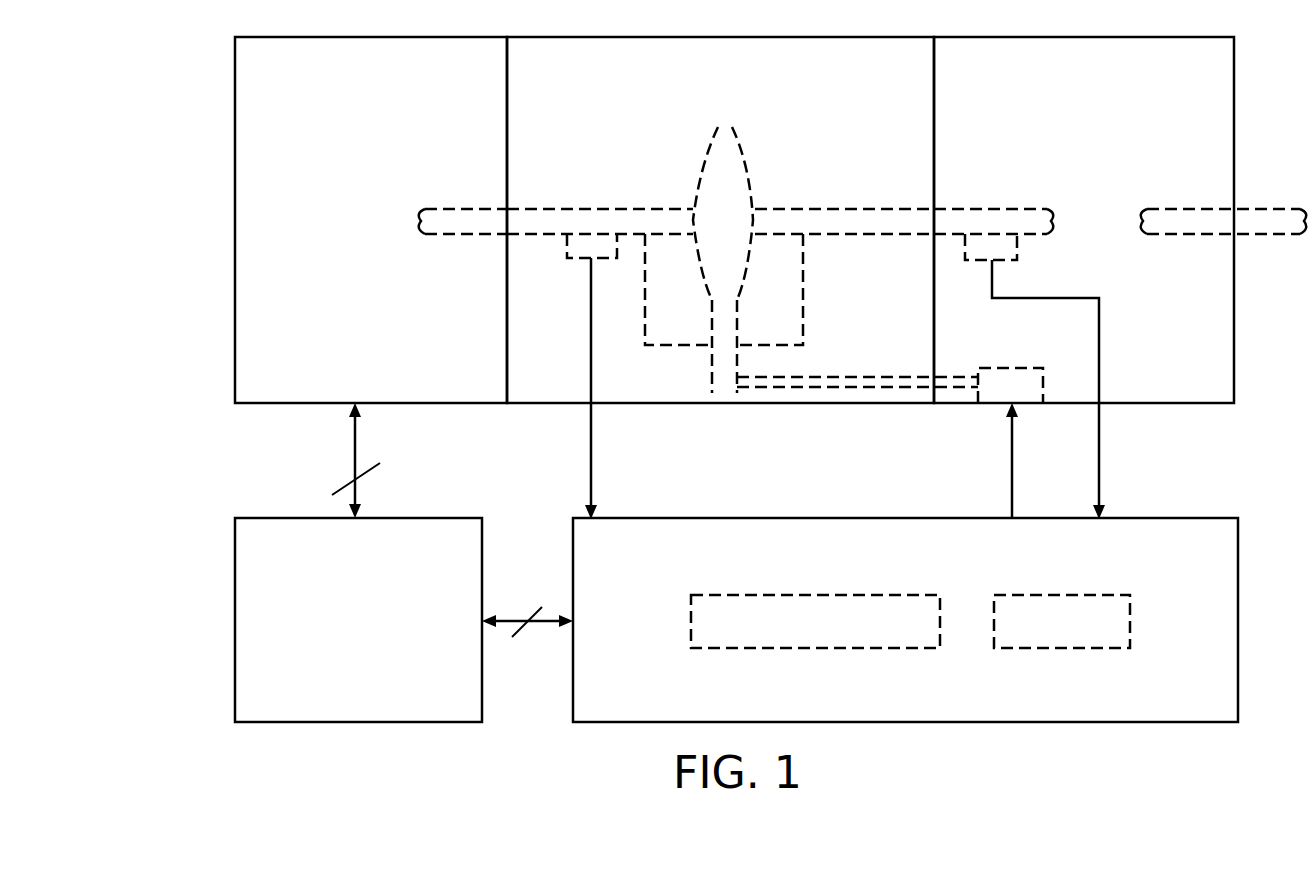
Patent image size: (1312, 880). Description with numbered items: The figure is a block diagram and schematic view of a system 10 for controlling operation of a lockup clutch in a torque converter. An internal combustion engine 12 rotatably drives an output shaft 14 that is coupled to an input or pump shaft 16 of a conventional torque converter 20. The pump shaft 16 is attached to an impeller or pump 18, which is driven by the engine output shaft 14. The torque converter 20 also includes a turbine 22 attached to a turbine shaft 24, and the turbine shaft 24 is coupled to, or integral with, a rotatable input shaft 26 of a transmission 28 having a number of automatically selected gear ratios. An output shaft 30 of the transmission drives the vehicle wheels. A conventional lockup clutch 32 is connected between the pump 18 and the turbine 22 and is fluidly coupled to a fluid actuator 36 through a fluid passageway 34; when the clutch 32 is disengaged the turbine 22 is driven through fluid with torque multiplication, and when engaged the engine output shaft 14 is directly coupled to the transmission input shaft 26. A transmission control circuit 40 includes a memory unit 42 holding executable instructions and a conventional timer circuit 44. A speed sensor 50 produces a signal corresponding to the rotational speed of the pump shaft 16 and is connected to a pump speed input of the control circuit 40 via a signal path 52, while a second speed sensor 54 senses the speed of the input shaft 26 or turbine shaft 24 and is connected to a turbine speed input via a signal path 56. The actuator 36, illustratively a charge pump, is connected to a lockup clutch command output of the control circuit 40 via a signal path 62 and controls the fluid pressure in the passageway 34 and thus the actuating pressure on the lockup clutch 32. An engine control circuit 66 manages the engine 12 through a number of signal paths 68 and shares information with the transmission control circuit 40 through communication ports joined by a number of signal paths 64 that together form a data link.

The system 10 is at (190, 745).
The internal combustion engine 12 is at (235, 132).
The output shaft 14 is at (458, 208).
The pump shaft 16 is at (570, 208).
The pump 18 is at (712, 143).
The torque converter 20 is at (671, 405).
The turbine 22 is at (738, 143).
The turbine shaft 24 is at (850, 208).
The input shaft 26 is at (980, 208).
The transmission 28 is at (1235, 80).
The output shaft 30 is at (1265, 208).
The lockup clutch 32 is at (712, 360).
The fluid passageway 34 is at (902, 376).
The actuator 36 is at (1012, 368).
The transmission control circuit 40 is at (1240, 605).
The memory unit 42 is at (691, 632).
The timer circuit 44 is at (1130, 621).
The speed sensor 50 is at (583, 262).
The signal path 52 is at (592, 430).
The speed sensor 54 is at (1017, 247).
The signal path 56 is at (1101, 442).
The signal path 62 is at (1010, 453).
The signal paths 64 is at (545, 626).
The engine control circuit 66 is at (453, 516).
The engine control data link 68 is at (357, 442).